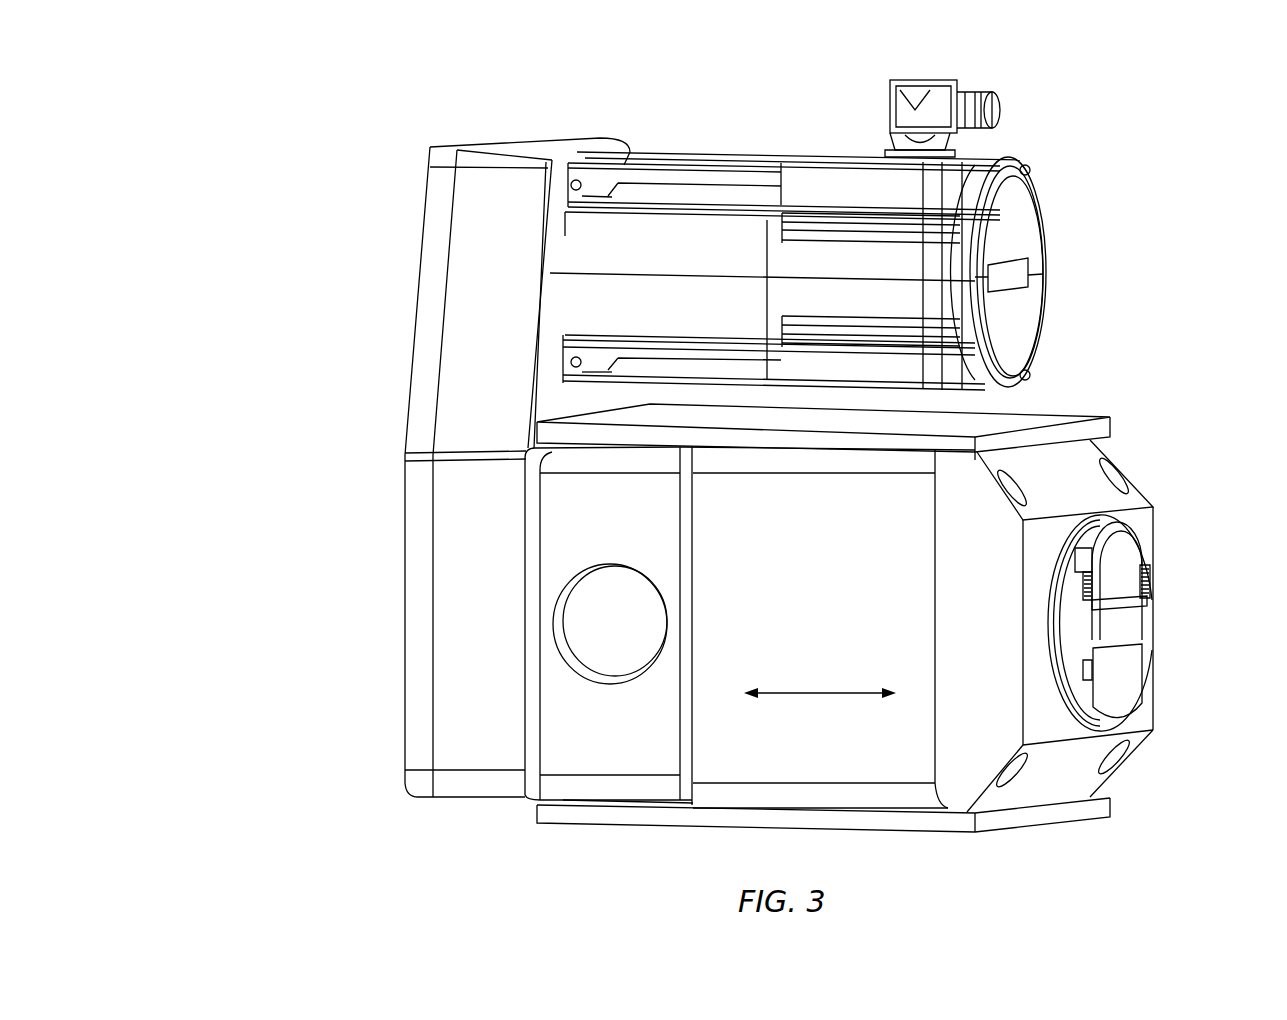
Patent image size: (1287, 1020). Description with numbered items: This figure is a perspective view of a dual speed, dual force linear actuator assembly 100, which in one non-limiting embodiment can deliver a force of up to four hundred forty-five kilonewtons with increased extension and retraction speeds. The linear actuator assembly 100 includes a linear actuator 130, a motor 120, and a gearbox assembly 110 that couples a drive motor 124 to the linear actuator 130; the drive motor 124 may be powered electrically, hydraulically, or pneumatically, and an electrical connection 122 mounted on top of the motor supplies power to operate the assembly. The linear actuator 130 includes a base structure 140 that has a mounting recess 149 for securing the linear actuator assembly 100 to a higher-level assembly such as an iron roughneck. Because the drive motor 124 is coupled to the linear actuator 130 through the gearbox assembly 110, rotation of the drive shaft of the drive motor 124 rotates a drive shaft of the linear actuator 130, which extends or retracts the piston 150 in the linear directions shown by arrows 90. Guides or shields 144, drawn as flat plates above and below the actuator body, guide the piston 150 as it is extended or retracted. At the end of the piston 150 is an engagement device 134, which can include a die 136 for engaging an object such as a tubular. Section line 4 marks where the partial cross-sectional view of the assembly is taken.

The linear actuator assembly 100 is at (206, 83).
The section line 4- 4 is at (392, 101).
The gearbox assembly 110 is at (500, 497).
The motor 120 is at (899, 212).
The electrical connection 122 is at (1001, 106).
The drive motor 124 is at (692, 263).
The linear actuator 130 is at (1124, 626).
The engagement device 134 is at (1118, 565).
The die 136 is at (1137, 613).
The base structure 140 is at (608, 626).
The guides 144 is at (1042, 415).
The mounting recess 149 is at (636, 631).
The piston 150 is at (840, 538).
The arrows 90 is at (813, 693).